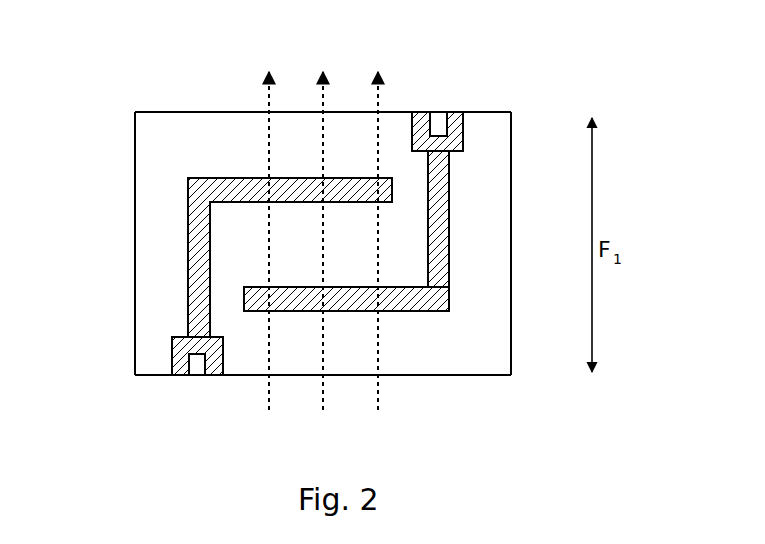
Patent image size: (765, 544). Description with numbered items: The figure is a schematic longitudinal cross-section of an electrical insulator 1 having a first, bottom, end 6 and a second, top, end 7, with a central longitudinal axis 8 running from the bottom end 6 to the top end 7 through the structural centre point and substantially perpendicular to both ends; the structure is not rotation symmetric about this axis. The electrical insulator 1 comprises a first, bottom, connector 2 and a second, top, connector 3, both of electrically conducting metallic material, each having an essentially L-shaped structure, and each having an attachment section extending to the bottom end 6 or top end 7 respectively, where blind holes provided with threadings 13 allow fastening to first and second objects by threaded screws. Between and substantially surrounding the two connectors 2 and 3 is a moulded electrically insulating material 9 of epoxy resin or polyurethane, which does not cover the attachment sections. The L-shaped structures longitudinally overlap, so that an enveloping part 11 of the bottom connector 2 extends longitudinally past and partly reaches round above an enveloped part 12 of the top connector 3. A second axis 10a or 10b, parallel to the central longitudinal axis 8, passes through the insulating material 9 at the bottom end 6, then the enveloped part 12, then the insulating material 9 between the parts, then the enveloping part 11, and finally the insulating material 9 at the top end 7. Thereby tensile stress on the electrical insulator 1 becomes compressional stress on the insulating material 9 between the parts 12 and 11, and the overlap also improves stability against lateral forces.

The electrical insulator 1 is at (508, 46).
The first, bottom, connector 2 is at (178, 338).
The second, top, connector 3 is at (444, 175).
The first, bottom, end 6 is at (455, 375).
The second, top, end 7 is at (183, 112).
The central longitudinal axis 8 is at (320, 260).
The moulded electrically insulating material 9 is at (497, 273).
The second axis 10a is at (264, 260).
The second axis 10b is at (374, 260).
The enveloping part of the bottom connector 11 is at (388, 198).
The enveloped part of the top connector 12 is at (250, 311).
The threadings 13 is at (437, 118).